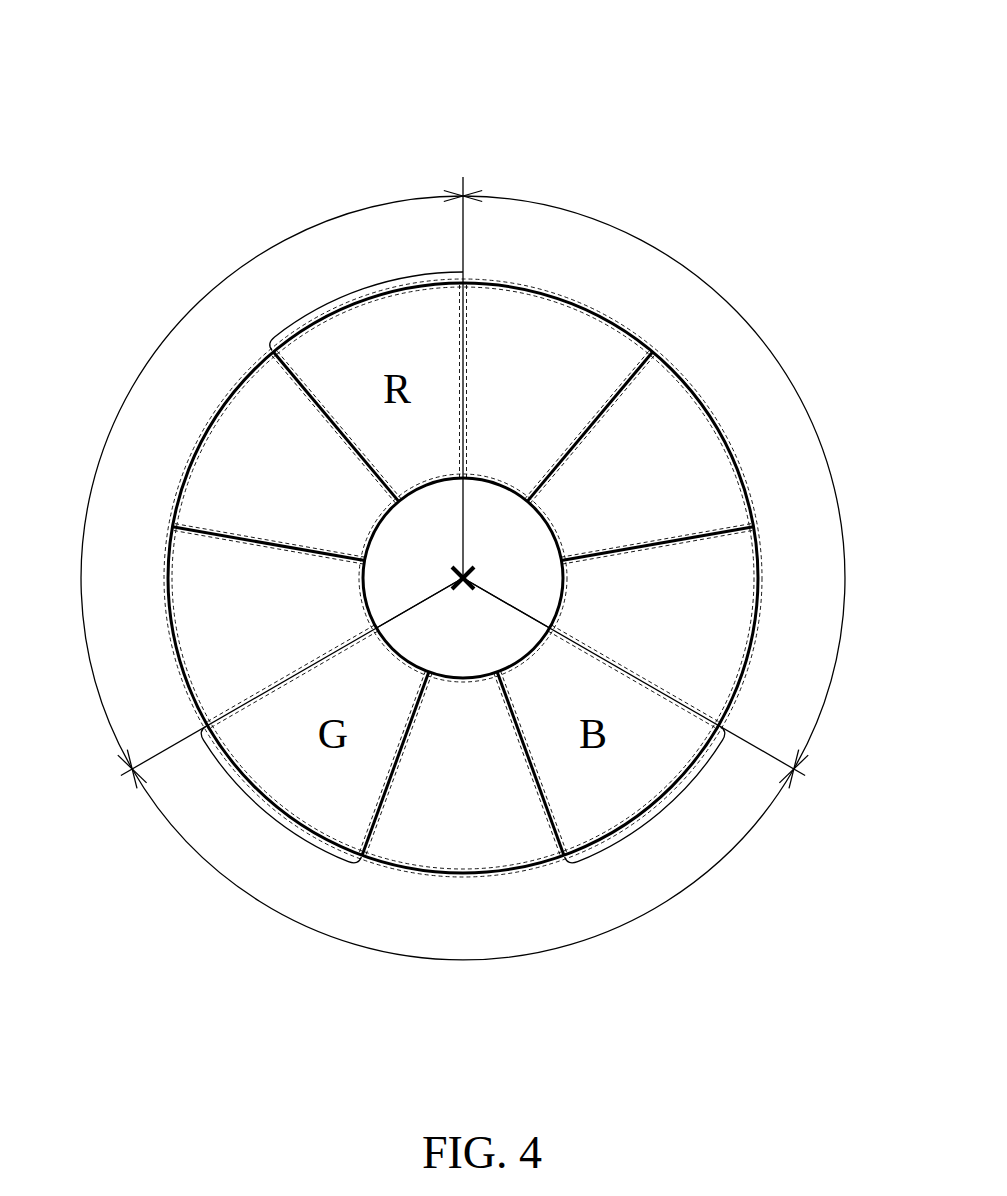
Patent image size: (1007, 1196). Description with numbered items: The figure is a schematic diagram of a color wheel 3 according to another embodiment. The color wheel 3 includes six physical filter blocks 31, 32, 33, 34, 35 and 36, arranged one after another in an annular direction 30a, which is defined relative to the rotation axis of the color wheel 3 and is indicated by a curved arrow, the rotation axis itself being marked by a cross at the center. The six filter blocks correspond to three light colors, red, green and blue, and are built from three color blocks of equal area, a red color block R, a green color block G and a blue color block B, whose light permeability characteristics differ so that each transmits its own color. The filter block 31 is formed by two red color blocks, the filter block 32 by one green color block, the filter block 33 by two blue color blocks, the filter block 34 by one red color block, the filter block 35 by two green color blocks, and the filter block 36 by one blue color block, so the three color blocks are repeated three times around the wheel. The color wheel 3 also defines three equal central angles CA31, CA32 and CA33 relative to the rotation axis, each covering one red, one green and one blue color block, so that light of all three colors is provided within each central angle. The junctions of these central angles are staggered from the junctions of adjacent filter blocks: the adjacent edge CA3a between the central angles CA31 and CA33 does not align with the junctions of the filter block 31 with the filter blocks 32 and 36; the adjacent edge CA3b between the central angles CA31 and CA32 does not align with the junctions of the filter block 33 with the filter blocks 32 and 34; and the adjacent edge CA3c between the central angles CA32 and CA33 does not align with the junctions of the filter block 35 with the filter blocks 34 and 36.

The color wheel 3 is at (726, 106).
The annular direction 30a is at (442, 509).
The filter block 31 is at (654, 350).
The filter block 32 is at (654, 350).
The filter block 33 is at (756, 526).
The filter block 34 is at (361, 857).
The filter block 35 is at (170, 526).
The filter block 36 is at (272, 350).
The adjacent edge CA3a is at (461, 333).
The adjacent edge CA3b is at (690, 712).
The adjacent edge CA3c is at (235, 712).
The central angle CA31 is at (654, 482).
The central angle CA32 is at (463, 888).
The central angle CA33 is at (259, 482).